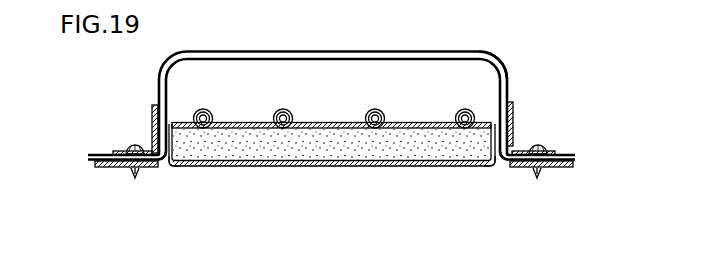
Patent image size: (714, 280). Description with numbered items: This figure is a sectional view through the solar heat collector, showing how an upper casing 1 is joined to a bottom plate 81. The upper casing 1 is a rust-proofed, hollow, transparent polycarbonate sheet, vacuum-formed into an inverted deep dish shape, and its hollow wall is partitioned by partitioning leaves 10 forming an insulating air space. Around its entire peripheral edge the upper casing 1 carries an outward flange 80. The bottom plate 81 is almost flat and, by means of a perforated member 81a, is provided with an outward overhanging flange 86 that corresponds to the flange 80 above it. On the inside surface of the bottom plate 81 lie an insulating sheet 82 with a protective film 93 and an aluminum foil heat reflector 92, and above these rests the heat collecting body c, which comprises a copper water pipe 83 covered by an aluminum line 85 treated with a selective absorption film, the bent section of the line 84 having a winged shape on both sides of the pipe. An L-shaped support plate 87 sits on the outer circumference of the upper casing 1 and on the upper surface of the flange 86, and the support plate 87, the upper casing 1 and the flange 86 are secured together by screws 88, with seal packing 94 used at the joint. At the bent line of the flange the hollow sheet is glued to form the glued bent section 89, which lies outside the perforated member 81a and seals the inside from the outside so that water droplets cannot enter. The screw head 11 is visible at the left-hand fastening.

The upper casing 1 is at (344, 51).
The heat collecting body c is at (504, 83).
The partitioning leaves 10 is at (153, 117).
The screw head 11 is at (129, 146).
The flange 80 is at (88, 157).
The bottom plate 81 is at (410, 167).
The perforated member 81a is at (168, 168).
The insulating sheet 82 is at (234, 156).
The copper water pipe 83 is at (199, 110).
The line 84 is at (406, 123).
The aluminum line 85 is at (212, 111).
The flange 86 is at (127, 177).
The support plate 87 is at (513, 107).
The screws 88 is at (539, 145).
The glued bent section 89 is at (163, 167).
The aluminum foil heat reflector 92 is at (335, 129).
The protective film 93 is at (300, 158).
The seal packing 94 is at (112, 168).